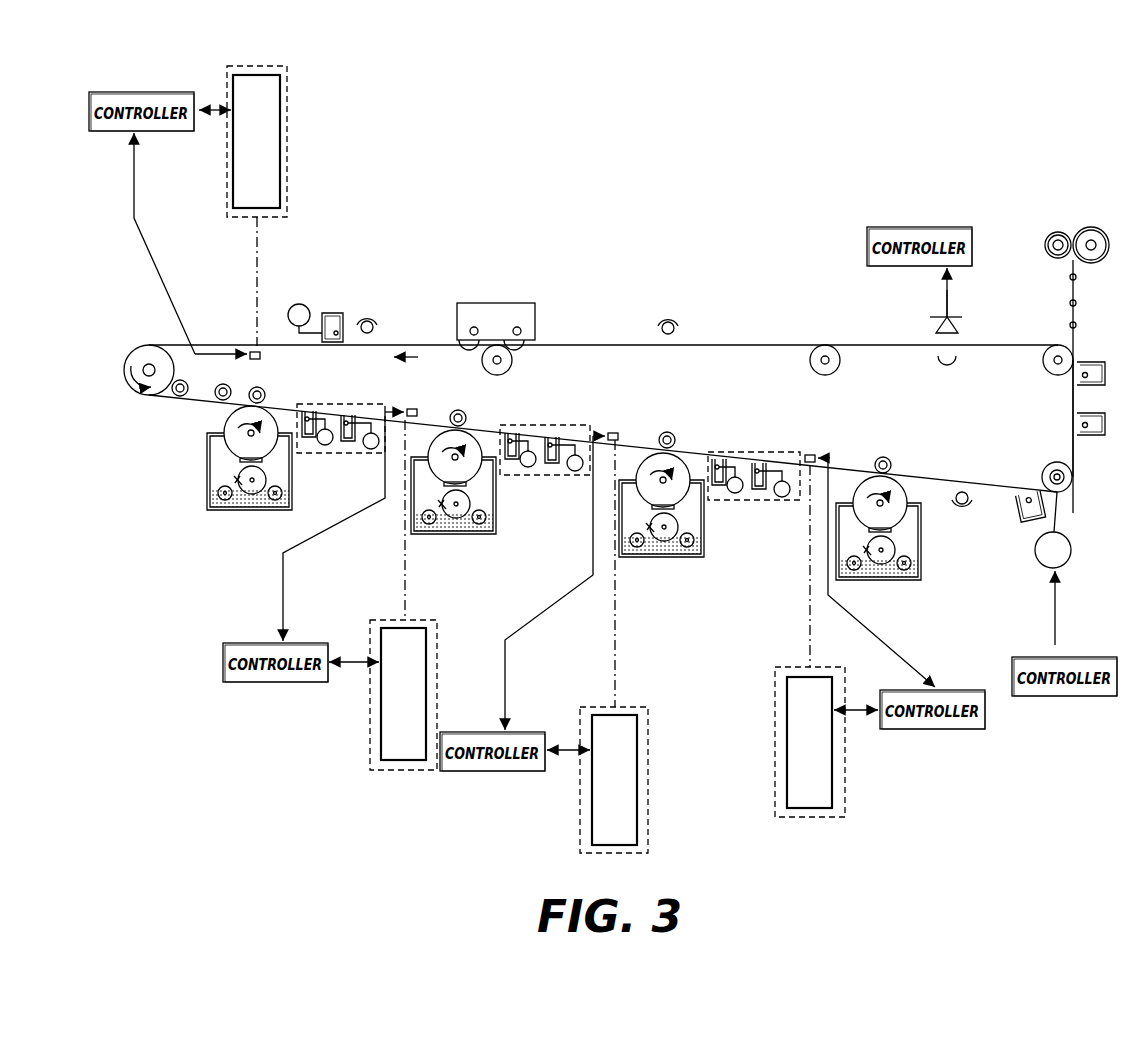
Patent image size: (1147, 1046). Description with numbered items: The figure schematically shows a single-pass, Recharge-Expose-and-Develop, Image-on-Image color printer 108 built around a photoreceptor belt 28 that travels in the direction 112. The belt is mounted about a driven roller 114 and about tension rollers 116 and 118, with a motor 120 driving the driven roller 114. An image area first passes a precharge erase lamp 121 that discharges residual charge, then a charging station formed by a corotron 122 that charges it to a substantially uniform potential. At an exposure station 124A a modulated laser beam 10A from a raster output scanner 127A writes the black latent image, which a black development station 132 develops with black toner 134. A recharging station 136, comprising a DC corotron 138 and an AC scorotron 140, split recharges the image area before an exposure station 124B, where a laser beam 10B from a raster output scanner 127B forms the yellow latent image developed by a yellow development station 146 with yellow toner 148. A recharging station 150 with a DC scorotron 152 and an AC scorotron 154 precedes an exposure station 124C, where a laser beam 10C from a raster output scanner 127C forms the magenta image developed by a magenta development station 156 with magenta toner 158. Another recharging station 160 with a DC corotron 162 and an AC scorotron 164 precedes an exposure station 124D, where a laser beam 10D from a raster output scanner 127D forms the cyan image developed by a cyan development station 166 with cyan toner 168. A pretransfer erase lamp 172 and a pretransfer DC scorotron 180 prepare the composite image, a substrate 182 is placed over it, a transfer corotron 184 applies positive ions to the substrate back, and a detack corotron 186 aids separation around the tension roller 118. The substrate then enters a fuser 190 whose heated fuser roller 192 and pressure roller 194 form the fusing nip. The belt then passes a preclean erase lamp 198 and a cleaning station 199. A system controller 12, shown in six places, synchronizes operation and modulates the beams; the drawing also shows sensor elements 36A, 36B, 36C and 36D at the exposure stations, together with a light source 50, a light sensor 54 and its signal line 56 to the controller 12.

The system controller 12 is at (108, 92).
The photoreceptor belt 28 is at (790, 345).
The laser beam 10A is at (260, 258).
The laser beam 10B is at (404, 590).
The laser beam 10C is at (615, 645).
The laser beam 10D is at (810, 617).
The first sensor 36A is at (263, 356).
The second sensor 36B is at (413, 409).
The third sensor 36C is at (618, 433).
The fourth sensor 36D is at (816, 455).
The light source 50 is at (942, 368).
The light sensor 54 is at (936, 314).
The line 56 is at (950, 300).
The color printer 108 is at (762, 133).
The direction 112 is at (418, 355).
The driven roller 114 is at (1075, 479).
The tension roller 116 is at (140, 366).
The tension roller 118 is at (1048, 347).
The motor 120 is at (1066, 565).
The precharge erase lamp 121 is at (377, 322).
The corotron 122 is at (333, 313).
The exposure station 124A is at (298, 76).
The exposure station 124B is at (442, 614).
The exposure station 124C is at (628, 704).
The exposure station 124D is at (770, 678).
The raster output scanner 127A is at (281, 143).
The raster output scanner 127B is at (427, 694).
The raster output scanner 127C is at (633, 790).
The raster output scanner 127D is at (788, 748).
The black development station 132 is at (252, 512).
The black toner 134 is at (240, 482).
The recharging station 136 is at (333, 404).
The DC corotron 138 is at (302, 410).
The AC scorotron 140 is at (350, 442).
The yellow development station 146 is at (460, 532).
The yellow toner 148 is at (443, 523).
The recharging station 150 is at (545, 425).
The DC scorotron 152 is at (508, 433).
The AC scorotron 154 is at (570, 440).
The magenta development station 156 is at (668, 556).
The magenta toner 158 is at (653, 547).
The recharging station 160 is at (752, 452).
The DC corotron 162 is at (716, 459).
The AC scorotron 164 is at (772, 465).
The cyan development station 166 is at (880, 582).
The cyan toner 168 is at (866, 570).
The pretransfer erase lamp 172 is at (961, 508).
The pretransfer DC scorotron 180 is at (1028, 524).
The substrate 182 is at (1076, 500).
The transfer corotron 184 is at (1102, 437).
The detack corotron 186 is at (1095, 360).
The fuser 190 is at (1051, 220).
The heated fuser roller 192 is at (1046, 243).
The pressure roller 194 is at (1092, 232).
The preclean erase lamp 198 is at (673, 320).
The cleaning station 199 is at (485, 303).